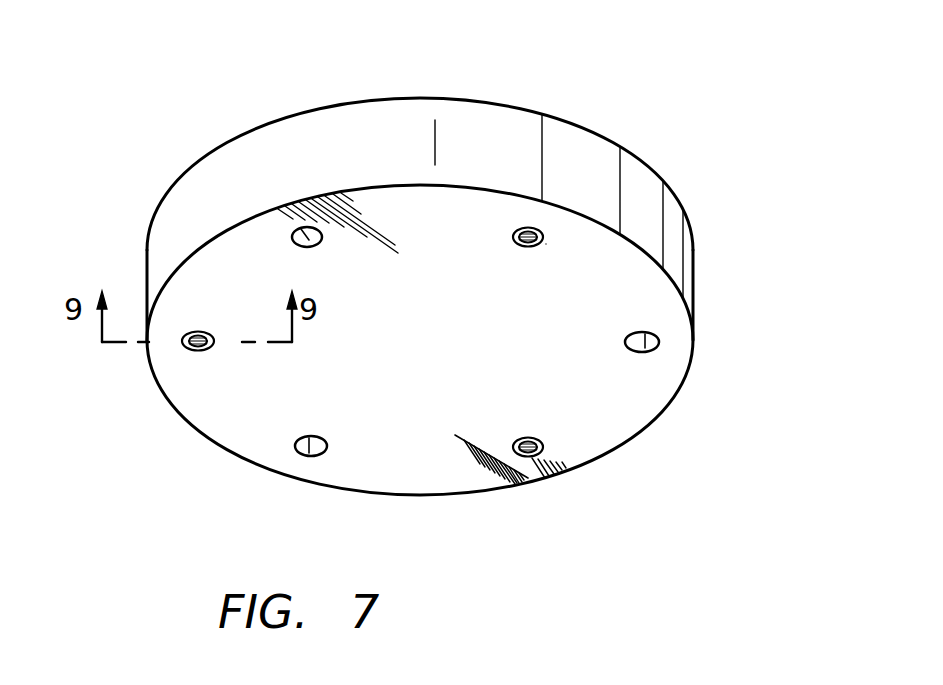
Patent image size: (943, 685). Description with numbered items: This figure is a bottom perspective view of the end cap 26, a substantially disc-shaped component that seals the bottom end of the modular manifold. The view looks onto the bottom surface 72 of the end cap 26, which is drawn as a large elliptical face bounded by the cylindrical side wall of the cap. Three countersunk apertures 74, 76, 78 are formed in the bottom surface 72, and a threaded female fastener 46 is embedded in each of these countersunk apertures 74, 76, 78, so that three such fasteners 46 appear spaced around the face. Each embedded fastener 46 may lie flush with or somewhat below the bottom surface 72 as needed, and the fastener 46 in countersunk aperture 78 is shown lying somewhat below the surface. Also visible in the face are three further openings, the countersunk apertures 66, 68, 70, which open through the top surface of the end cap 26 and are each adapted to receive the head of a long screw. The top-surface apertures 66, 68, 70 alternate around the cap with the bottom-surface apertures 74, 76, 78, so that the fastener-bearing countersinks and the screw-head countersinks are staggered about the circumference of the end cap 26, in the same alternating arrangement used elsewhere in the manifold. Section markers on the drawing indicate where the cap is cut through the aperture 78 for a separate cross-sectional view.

The end cap 26 is at (650, 99).
The threaded female fastener 46 is at (523, 231).
The countersunk aperture 66 is at (643, 351).
The countersunk aperture 68 is at (293, 243).
The countersunk aperture 70 is at (315, 457).
The bottom surface 72 is at (619, 417).
The countersunk aperture 74 is at (525, 440).
The countersunk aperture 76 is at (546, 244).
The countersunk aperture 78 is at (192, 348).